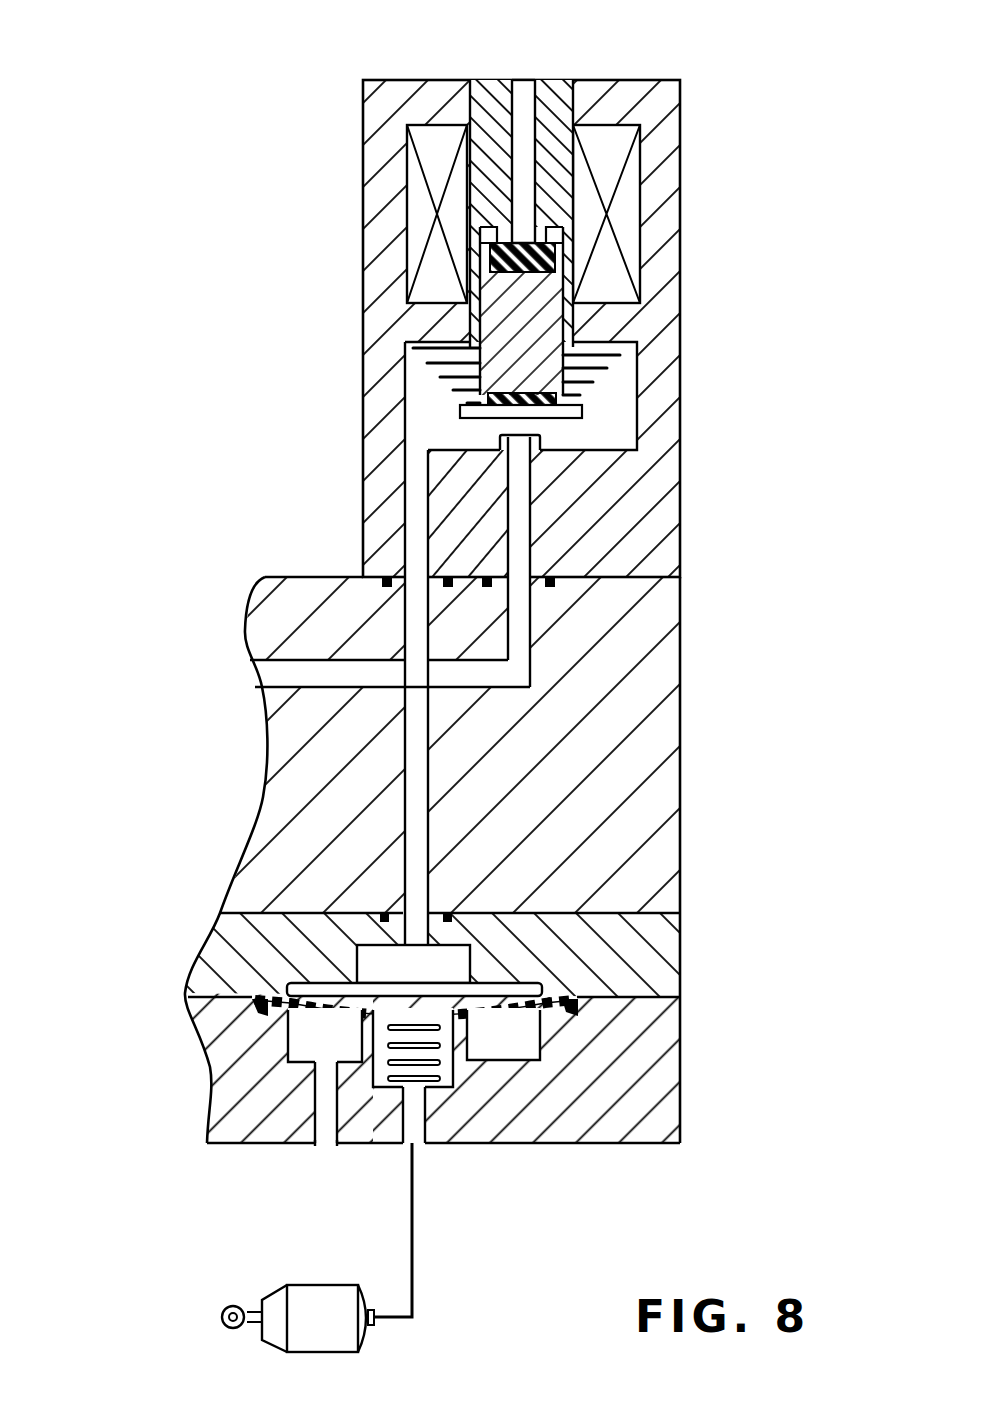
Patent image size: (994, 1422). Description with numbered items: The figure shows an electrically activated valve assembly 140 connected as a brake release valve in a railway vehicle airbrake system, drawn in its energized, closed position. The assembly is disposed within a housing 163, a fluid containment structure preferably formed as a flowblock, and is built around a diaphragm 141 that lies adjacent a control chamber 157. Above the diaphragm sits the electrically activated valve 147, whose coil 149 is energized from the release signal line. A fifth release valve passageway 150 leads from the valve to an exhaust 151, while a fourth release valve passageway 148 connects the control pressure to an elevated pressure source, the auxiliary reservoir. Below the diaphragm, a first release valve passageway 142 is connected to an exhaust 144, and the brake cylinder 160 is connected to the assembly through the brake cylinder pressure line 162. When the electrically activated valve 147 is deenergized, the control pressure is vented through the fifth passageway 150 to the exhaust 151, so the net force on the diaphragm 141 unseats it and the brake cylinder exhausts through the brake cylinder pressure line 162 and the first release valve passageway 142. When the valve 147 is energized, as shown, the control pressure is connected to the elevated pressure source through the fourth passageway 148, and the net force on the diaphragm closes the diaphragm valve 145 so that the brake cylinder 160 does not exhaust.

The electrically activated valve assembly 140 is at (278, 462).
The diaphragm 141 is at (305, 1020).
The first release valve passageway 142 is at (328, 1102).
The exhaust 144 is at (330, 1155).
The diaphragm valve 145 is at (700, 1033).
The electrically activated valve 147 is at (338, 258).
The fourth release valve passageway 148 is at (265, 676).
The coil 149 is at (410, 170).
The fifth release valve passageway 150 is at (522, 115).
The exhaust 151 is at (522, 68).
The control chamber 157 is at (385, 950).
The brake cylinder 160 is at (295, 1290).
The brake cylinder pressure line 162 is at (412, 1270).
The housing 163 is at (682, 650).